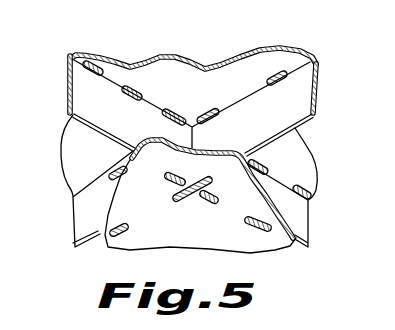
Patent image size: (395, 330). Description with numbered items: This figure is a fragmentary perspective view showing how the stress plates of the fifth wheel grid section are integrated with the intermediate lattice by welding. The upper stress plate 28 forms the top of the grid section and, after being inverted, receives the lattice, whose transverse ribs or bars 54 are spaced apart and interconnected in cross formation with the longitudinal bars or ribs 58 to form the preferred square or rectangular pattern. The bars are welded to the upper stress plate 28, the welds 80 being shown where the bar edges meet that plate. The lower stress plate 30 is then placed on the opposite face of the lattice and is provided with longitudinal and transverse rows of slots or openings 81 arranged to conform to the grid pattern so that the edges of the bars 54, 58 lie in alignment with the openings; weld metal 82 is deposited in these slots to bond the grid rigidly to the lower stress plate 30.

The upper stress plate 28 is at (188, 82).
The lower stress plate 30 is at (243, 241).
The transverse ribs or bars 54 is at (306, 103).
The longitudinal bars or ribs 58 is at (84, 98).
The weld 80 is at (268, 78).
The slots or openings 81 is at (208, 204).
The weld metal 82 is at (190, 195).